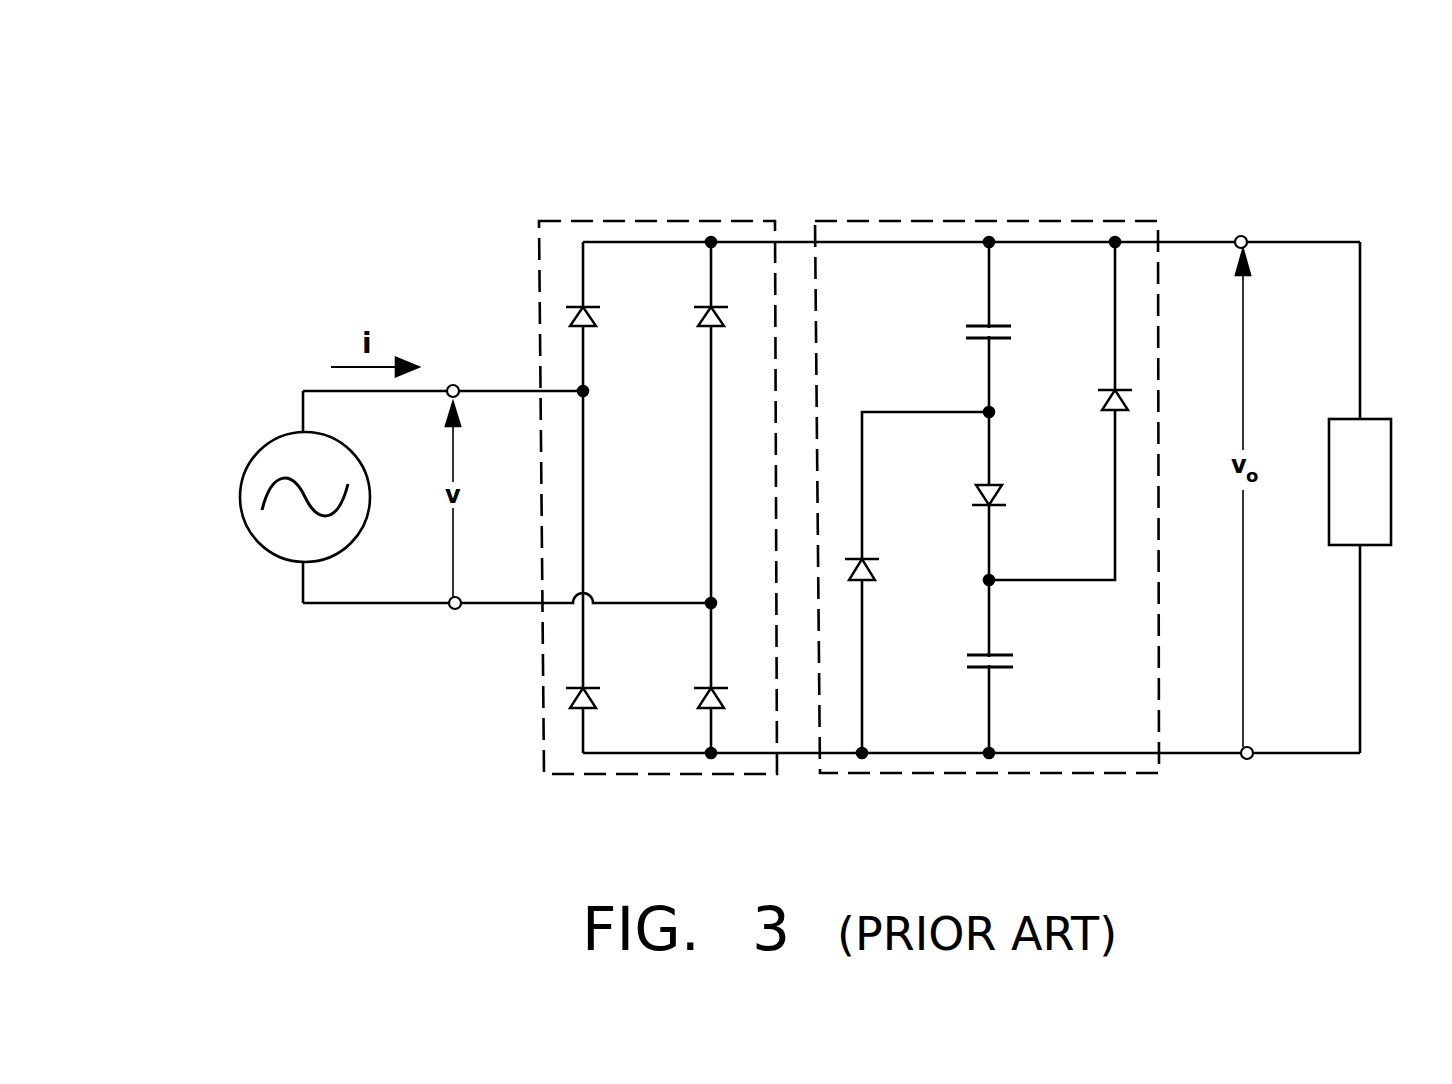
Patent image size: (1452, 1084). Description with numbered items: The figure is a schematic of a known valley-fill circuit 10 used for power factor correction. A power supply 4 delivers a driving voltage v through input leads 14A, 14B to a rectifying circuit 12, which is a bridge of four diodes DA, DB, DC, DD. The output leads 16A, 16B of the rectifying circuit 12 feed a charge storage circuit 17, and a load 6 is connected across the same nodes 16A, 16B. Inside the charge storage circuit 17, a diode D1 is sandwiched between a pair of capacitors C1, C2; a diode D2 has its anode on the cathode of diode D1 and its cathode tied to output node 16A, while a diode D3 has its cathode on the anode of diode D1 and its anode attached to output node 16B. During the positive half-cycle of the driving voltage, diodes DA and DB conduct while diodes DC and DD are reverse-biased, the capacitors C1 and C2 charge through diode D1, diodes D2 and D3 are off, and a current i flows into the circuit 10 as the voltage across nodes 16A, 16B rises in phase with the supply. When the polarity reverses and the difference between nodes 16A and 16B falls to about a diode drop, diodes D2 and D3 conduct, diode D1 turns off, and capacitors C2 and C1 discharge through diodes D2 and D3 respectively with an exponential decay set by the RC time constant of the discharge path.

The valley-fill circuit 10 is at (1278, 137).
The power supply 4 is at (249, 530).
The load 6 is at (1391, 447).
The rectifying circuit 12 is at (665, 221).
The charge storage circuit 17 is at (1050, 221).
The input lead 14A is at (453, 384).
The input lead 14B is at (455, 610).
The output lead 16A is at (1242, 235).
The output lead 16B is at (1247, 760).
The diode DA is at (705, 328).
The diode DB is at (597, 697).
The diode DC is at (597, 317).
The diode DD is at (708, 688).
The capacitor C1 is at (974, 327).
The capacitor C2 is at (1010, 655).
The diode D1 is at (994, 487).
The diode D2 is at (1106, 388).
The diode D3 is at (872, 569).